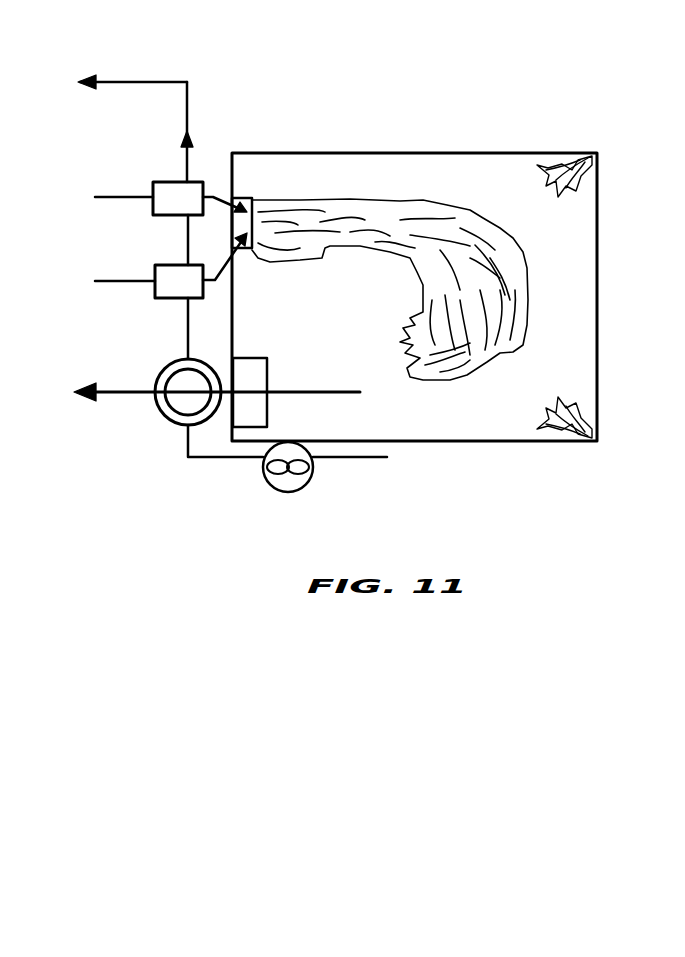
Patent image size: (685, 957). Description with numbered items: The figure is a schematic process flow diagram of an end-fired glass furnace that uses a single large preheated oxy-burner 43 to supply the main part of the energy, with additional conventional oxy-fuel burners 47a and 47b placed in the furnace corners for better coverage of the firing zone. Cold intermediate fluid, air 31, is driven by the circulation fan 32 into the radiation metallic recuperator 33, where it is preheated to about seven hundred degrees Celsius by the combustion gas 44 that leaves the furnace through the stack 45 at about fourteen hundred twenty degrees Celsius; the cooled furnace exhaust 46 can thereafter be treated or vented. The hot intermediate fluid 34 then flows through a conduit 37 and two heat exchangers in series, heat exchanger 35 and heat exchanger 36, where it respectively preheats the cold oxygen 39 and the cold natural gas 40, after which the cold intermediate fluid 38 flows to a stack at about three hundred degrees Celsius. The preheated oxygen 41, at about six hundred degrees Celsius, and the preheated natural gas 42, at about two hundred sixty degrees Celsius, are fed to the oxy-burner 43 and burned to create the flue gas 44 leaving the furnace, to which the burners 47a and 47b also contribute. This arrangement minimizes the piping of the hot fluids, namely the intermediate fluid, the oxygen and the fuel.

The air 31 is at (335, 458).
The circulation fan 32 is at (293, 492).
The recuperator 33 is at (165, 413).
The hot intermediate fluid 34 is at (188, 333).
The heat exchanger 35 is at (163, 288).
The heat exchanger 36 is at (170, 207).
The conduit 37 is at (186, 233).
The cold intermediate fluid 38 is at (137, 82).
The cold oxygen 39 is at (113, 281).
The cold natural gas 40 is at (110, 197).
The oxygen 41 is at (210, 282).
The natural gas 42 is at (213, 197).
The oxy-burner 43 is at (243, 198).
The combustion gas 44 is at (368, 208).
The stack 45 is at (262, 365).
The cooled furnace exhaust 46 is at (130, 393).
The oxy-fuel burner 47a is at (563, 155).
The oxy-fuel burner 47b is at (575, 413).